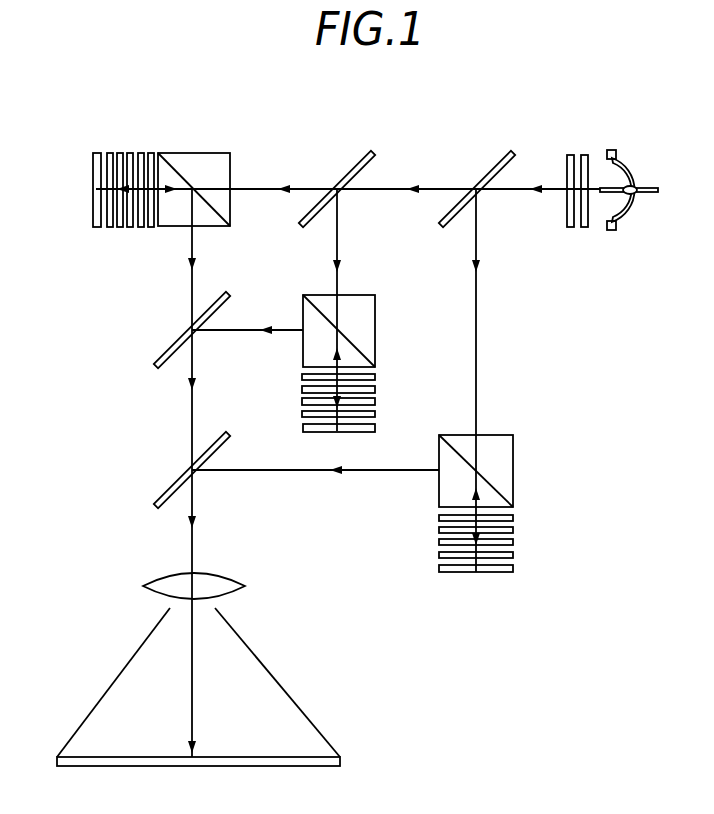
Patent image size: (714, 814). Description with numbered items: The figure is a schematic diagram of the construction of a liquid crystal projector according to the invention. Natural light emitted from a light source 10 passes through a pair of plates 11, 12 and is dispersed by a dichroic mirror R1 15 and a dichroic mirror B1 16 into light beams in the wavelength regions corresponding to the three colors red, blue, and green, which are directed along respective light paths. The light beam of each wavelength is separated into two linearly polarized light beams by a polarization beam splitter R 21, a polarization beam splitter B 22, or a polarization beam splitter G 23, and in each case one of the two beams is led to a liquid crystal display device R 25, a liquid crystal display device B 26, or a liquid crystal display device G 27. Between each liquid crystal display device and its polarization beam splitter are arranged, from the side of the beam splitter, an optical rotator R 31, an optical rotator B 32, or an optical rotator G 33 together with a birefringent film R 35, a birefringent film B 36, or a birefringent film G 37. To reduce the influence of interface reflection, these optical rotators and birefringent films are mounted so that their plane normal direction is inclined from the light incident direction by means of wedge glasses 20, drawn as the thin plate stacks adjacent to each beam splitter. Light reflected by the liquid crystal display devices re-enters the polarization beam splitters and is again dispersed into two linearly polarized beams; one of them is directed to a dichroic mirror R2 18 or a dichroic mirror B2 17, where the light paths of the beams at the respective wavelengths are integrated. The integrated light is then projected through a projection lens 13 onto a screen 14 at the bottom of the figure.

The light source 10 is at (629, 179).
The filter 11 is at (584, 153).
The filter 12 is at (568, 153).
The projection lens 13 is at (184, 581).
The screen 14 is at (183, 692).
The dichroic mirror R1 15 is at (477, 177).
The dichroic mirror B1 16 is at (337, 177).
The dichroic mirror B2 17 is at (177, 338).
The dichroic mirror R2 18 is at (179, 476).
The wedge glasses 20 is at (110, 228).
The polarization beam splitter R 21 is at (491, 470).
The polarization beam splitter B 22 is at (354, 331).
The polarization beam splitter G 23 is at (194, 177).
The liquid crystal display device R 25 is at (476, 584).
The liquid crystal display device B 26 is at (340, 443).
The liquid crystal display device G 27 is at (84, 190).
The optical rotator R 31 is at (515, 530).
The optical rotator B 32 is at (377, 391).
The optical rotator G 33 is at (131, 228).
The birefringent film R 35 is at (437, 543).
The birefringent film B 36 is at (300, 400).
The birefringent film G 37 is at (120, 152).